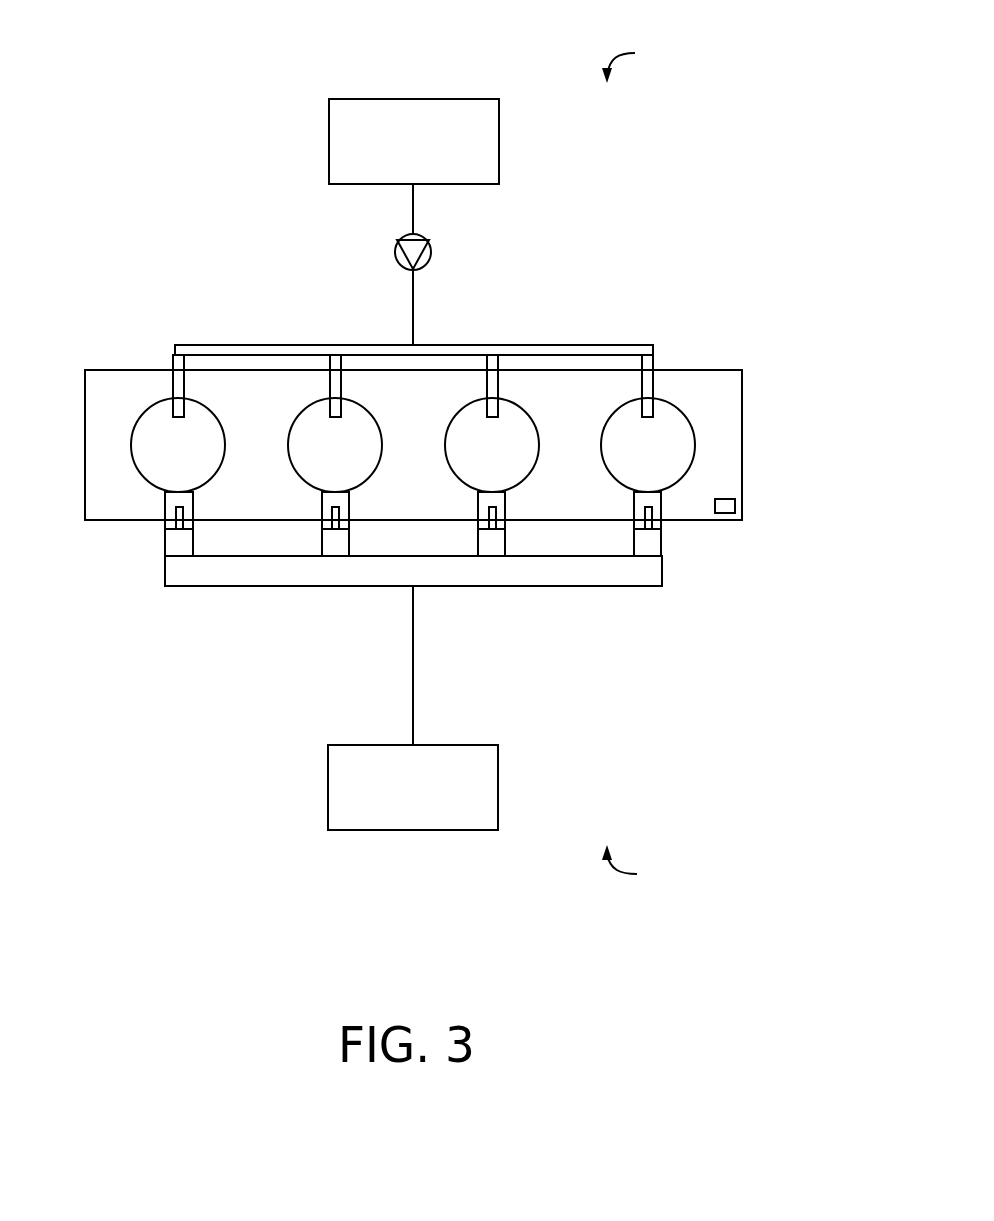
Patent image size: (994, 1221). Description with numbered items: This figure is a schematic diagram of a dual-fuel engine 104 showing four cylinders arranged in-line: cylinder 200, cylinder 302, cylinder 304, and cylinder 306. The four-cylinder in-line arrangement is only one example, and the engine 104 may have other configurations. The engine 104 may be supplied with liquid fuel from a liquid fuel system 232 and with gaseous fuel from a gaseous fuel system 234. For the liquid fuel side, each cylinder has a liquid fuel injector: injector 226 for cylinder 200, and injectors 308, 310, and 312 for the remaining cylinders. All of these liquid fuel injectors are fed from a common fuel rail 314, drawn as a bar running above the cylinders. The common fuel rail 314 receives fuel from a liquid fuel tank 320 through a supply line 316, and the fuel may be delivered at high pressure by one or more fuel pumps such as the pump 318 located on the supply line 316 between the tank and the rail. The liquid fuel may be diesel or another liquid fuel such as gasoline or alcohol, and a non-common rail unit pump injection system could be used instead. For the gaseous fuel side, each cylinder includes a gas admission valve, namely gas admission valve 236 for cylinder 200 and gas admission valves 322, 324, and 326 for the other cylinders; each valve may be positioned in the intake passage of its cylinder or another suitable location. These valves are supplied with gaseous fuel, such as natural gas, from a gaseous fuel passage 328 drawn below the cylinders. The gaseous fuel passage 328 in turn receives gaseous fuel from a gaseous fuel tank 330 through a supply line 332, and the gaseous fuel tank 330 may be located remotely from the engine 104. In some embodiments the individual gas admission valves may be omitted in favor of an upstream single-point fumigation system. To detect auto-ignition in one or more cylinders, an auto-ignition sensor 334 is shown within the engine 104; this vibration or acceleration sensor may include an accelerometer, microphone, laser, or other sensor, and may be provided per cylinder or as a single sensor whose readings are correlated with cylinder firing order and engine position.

The engine 104 is at (722, 380).
The cylinder 200 is at (195, 459).
The injector 226 is at (179, 368).
The liquid fuel system 232 is at (638, 63).
The gaseous fuel system 234 is at (638, 866).
The gas admission valve 236 is at (170, 535).
The cylinder 302 is at (352, 459).
The cylinder 304 is at (509, 459).
The cylinder 306 is at (665, 459).
The injector 308 is at (336, 362).
The injector 310 is at (490, 360).
The injector 312 is at (646, 362).
The common fuel rail 314 is at (236, 349).
The supply line 316 is at (413, 300).
The pump 318 is at (397, 243).
The liquid fuel tank 320 is at (431, 156).
The gas admission valve 322 is at (335, 534).
The gas admission valve 324 is at (490, 534).
The gas admission valve 326 is at (647, 534).
The gaseous fuel passage 328 is at (348, 582).
The gaseous fuel tank 330 is at (430, 801).
The supply line 332 is at (413, 660).
The auto-ignition sensor 334 is at (724, 502).